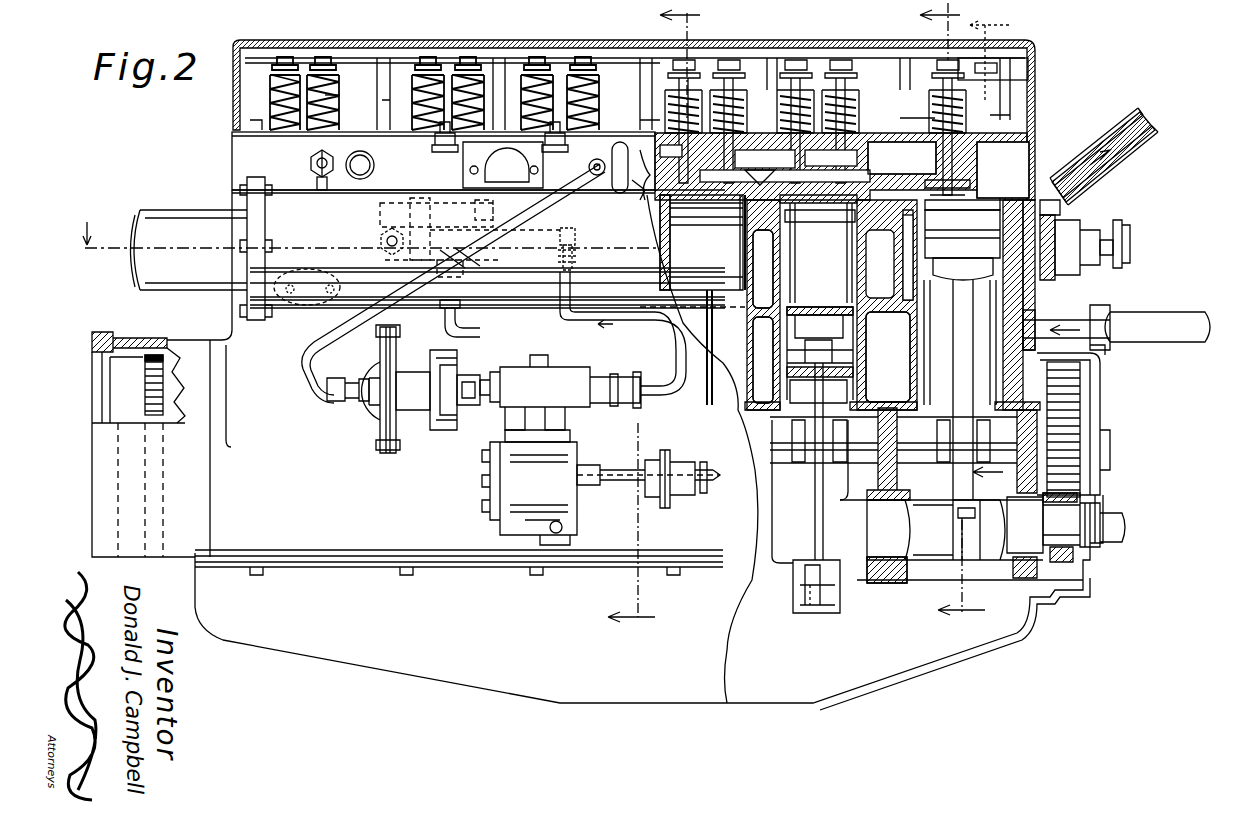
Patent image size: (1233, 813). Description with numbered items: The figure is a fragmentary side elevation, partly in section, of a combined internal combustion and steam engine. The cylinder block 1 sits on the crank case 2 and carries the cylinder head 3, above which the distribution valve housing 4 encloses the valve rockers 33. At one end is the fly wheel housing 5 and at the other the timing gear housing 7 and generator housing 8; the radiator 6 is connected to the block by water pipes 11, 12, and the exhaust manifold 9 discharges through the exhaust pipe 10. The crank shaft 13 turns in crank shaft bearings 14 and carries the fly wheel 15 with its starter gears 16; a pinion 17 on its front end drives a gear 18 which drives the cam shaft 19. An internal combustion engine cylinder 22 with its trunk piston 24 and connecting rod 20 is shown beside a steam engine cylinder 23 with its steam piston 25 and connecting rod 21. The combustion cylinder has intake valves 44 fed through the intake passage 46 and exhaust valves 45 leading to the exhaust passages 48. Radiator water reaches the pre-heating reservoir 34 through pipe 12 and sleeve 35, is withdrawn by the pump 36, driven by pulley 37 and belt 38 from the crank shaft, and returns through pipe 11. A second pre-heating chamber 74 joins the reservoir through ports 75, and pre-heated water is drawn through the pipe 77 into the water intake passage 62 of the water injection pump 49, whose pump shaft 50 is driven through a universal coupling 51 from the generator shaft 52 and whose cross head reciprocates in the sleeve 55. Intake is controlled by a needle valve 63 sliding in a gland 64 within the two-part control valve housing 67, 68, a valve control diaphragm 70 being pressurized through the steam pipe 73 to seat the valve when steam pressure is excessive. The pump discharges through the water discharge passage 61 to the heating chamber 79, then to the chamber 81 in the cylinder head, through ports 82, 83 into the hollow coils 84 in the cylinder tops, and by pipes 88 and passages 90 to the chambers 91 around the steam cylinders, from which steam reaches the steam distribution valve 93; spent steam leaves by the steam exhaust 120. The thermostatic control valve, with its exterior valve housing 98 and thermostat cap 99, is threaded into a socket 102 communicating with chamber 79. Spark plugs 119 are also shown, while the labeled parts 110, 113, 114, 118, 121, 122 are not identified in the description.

The cylinder block 1 is at (232, 325).
The crank case 2 is at (330, 615).
The cylinder head 3 is at (232, 152).
The distribution valve housing 4 is at (368, 42).
The fly wheel housing 5 is at (122, 338).
The radiator 6 is at (1001, 255).
The timing gear housing 7 is at (1097, 393).
The generator housing 8 is at (1048, 136).
The exhaust manifold 9 is at (487, 262).
The exhaust pipe 10 is at (165, 210).
The water pipe 11 is at (1148, 140).
The water pipe 12 is at (1192, 312).
The crank shaft 13 is at (765, 590).
The crank shaft bearings 14 is at (880, 585).
The fly wheel 15 is at (123, 400).
The starter gears 16 is at (145, 382).
The pinion 17 is at (1085, 492).
The gear 18 is at (1080, 420).
The cam shaft 19 is at (921, 448).
The internal combustion engine cylinder connecting rod 20 is at (790, 504).
The steam engine cylinder connecting rod 21 is at (966, 483).
The internal combustion engine cylinder 22 is at (840, 449).
The steam engine cylinder 23 is at (962, 234).
The internal combustion engine piston 24 is at (825, 300).
The steam engine piston 25 is at (950, 250).
The valve rockers 33 is at (284, 57).
The pre-heating reservoir 34 is at (822, 360).
The sleeve 35 is at (1100, 345).
The pump 36 is at (1090, 220).
The pulley 37 is at (1132, 243).
The belt 38 is at (1125, 222).
The intake valves 44 is at (425, 65).
The exhaust valves 45 is at (470, 57).
The intake passage 46 is at (902, 158).
The exhaust passages 48 is at (495, 158).
The water injection pump 49 is at (545, 475).
The pump shaft 50 is at (620, 483).
The universal coupling 51 is at (670, 450).
The generator shaft 52 is at (705, 492).
The sleeve 55 is at (560, 436).
The water discharge passage 61 is at (672, 340).
The water intake passage 62 is at (490, 362).
The needle valve 63 is at (462, 410).
The gland 64 is at (468, 409).
The control valve housing part 67 is at (425, 425).
The control valve housing part 68 is at (452, 368).
The valve control diaphragm 70 is at (380, 397).
The steam pipe 73 is at (520, 228).
The pre-heating chamber 74 is at (820, 269).
The ports 75 is at (832, 357).
The pipe 77 is at (385, 262).
The heating chamber 79 is at (722, 237).
The chamber 81 is at (870, 126).
The ports 82 is at (773, 174).
The ports 83 is at (635, 205).
The hollow coils 84 is at (805, 207).
The pipes 88 is at (618, 150).
The passages 90 is at (300, 305).
The chambers 91 is at (1015, 228).
The steam distribution valve 93 is at (270, 92).
The exterior valve housing 98 is at (470, 265).
The thermostat cap 99 is at (403, 241).
The socket 102 is at (382, 210).
The stud 110 is at (315, 180).
The nut 113 is at (312, 155).
The washer 114 is at (342, 154).
The passage 118 is at (965, 155).
The spark plugs 119 is at (335, 57).
The steam exhaust 120 is at (962, 206).
The rocker pivot 121 is at (435, 150).
The opening 122 is at (377, 165).